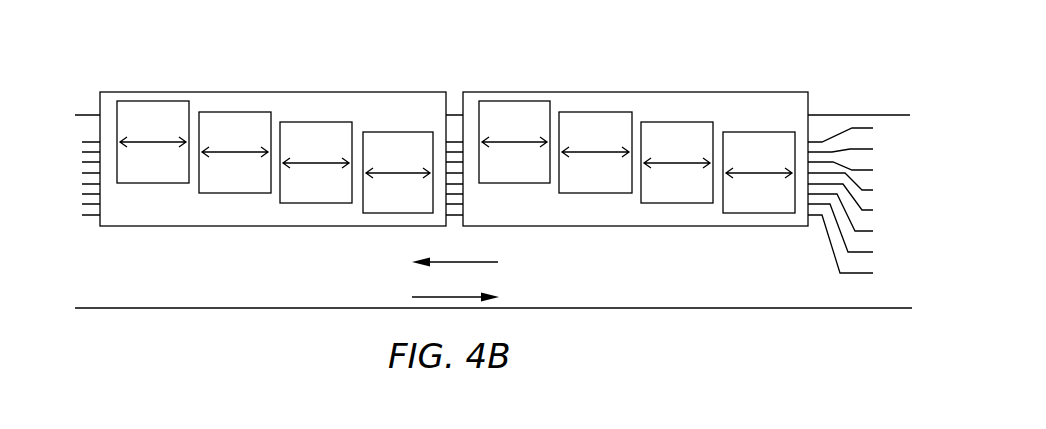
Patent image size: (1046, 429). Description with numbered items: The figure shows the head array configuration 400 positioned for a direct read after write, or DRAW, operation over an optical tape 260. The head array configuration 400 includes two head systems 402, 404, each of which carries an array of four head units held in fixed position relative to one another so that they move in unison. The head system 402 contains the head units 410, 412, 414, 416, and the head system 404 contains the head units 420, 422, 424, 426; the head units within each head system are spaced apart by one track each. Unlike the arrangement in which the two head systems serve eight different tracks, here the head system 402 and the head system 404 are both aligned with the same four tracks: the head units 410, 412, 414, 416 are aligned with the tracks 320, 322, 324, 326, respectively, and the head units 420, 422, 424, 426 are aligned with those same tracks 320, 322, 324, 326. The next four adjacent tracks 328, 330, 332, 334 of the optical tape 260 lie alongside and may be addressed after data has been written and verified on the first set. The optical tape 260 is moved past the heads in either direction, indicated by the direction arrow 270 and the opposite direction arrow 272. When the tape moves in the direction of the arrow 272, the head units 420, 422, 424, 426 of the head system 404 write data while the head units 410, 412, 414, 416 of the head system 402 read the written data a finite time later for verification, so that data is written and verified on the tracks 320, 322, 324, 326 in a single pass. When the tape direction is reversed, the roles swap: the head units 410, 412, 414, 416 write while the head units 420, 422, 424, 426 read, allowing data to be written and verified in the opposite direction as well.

The optical tape 260 is at (120, 289).
The direction arrow 270 is at (455, 251).
The direction arrow 272 is at (455, 286).
The track 320 is at (495, 129).
The track 322 is at (495, 149).
The track 324 is at (495, 170).
The track 326 is at (495, 188).
The track 328 is at (495, 203).
The track 330 is at (495, 219).
The track 332 is at (495, 234).
The track 334 is at (495, 250).
The head array configuration 400 is at (301, 257).
The head system 402 is at (177, 92).
The head system 404 is at (537, 92).
The head unit 410 is at (165, 175).
The head unit 412 is at (247, 186).
The head unit 414 is at (328, 195).
The head unit 416 is at (410, 206).
The head unit 420 is at (526, 175).
The head unit 422 is at (607, 186).
The head unit 424 is at (689, 195).
The head unit 426 is at (771, 206).